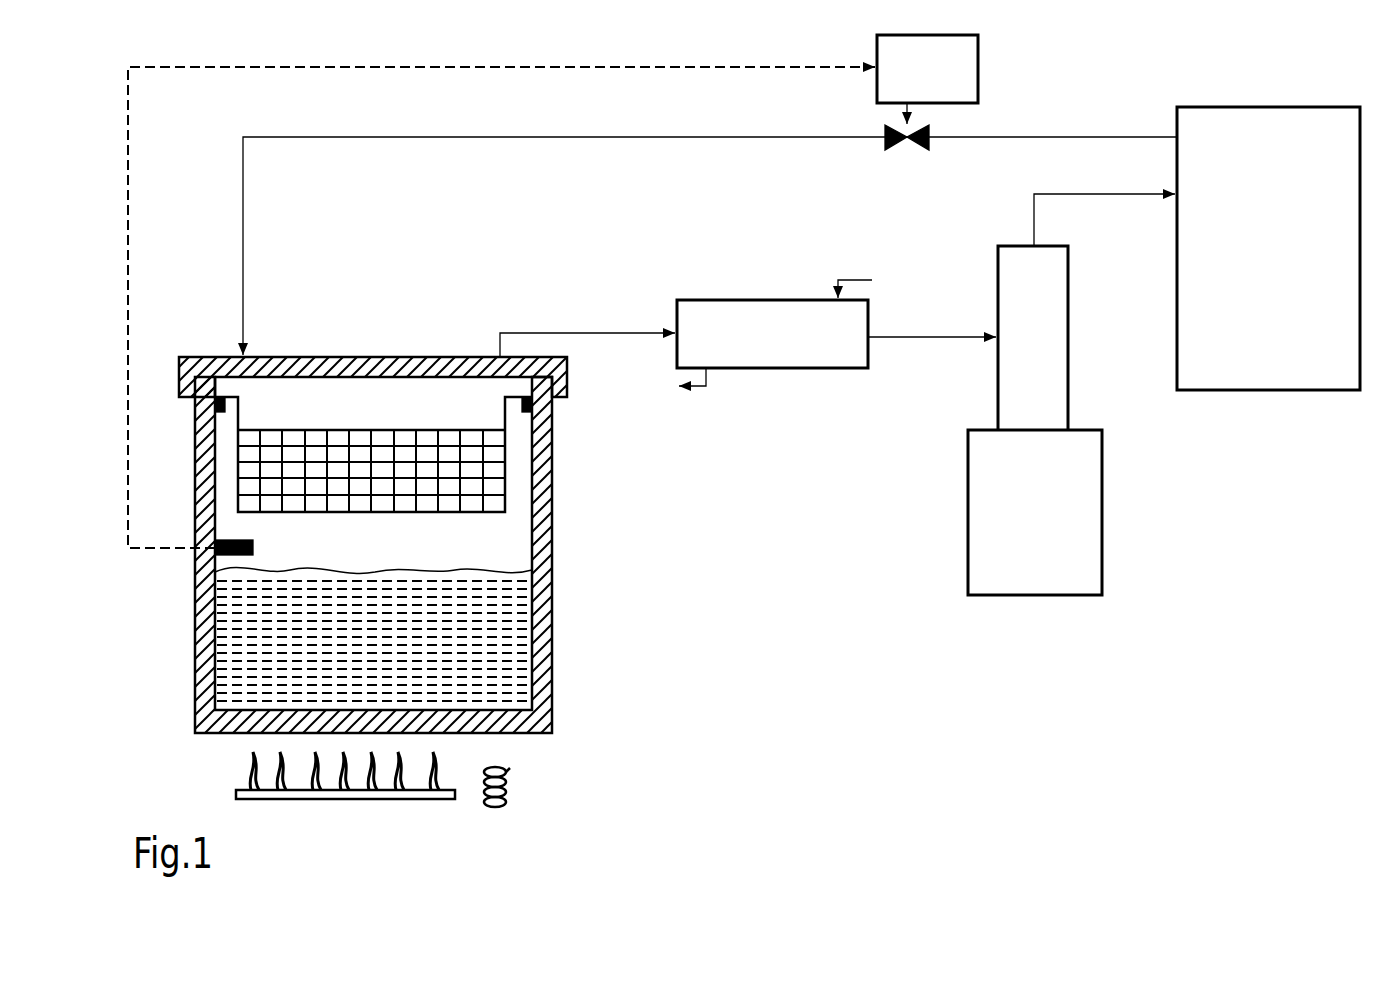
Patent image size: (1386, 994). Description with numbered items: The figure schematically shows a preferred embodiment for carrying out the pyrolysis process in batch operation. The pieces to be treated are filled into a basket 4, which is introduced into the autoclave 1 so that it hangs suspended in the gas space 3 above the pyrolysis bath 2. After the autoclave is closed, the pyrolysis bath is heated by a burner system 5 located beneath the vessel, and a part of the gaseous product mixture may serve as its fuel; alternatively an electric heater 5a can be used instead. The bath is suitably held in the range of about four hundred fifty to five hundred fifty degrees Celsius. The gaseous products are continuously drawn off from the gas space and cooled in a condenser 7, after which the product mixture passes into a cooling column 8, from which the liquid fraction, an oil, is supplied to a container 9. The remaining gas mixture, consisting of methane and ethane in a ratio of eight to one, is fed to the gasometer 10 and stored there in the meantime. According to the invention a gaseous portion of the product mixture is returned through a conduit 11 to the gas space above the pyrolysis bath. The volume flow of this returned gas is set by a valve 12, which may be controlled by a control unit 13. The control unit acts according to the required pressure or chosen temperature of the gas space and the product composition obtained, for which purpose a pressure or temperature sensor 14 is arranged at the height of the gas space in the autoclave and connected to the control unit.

The autoclave 1 is at (550, 615).
The pyrolysis bath 2 is at (470, 665).
The gas space 3 is at (467, 528).
The basket 4 is at (492, 472).
The burner system 5 is at (252, 772).
The electric heater 5a is at (508, 767).
The condenser 7 is at (797, 368).
The cooling column 8 is at (1070, 338).
The container 9 is at (1102, 510).
The gasometer 10 is at (1297, 390).
The conduit 11 is at (243, 255).
The valve 12 is at (915, 145).
The control unit 13 is at (978, 70).
The pressure or temperature sensor 14 is at (235, 557).